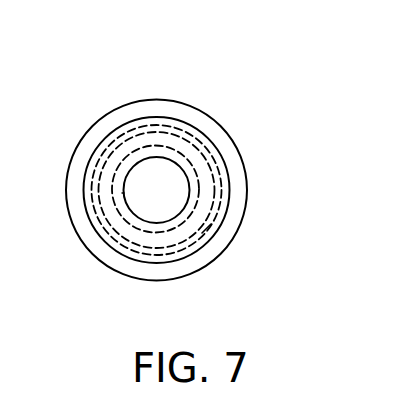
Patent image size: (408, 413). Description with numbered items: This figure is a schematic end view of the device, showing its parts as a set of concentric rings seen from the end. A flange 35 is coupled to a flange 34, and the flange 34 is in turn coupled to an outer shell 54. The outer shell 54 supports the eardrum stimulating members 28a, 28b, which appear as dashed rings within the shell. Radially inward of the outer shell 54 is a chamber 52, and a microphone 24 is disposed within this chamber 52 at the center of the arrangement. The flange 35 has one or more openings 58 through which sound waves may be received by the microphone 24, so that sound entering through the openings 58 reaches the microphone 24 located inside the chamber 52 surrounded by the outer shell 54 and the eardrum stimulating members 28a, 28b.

The microphone 24 is at (173, 186).
The eardrum stimulating member 28a is at (181, 124).
The eardrum stimulating member 28b is at (150, 257).
The flange 34 is at (236, 143).
The flange 35 is at (151, 118).
The chamber 52 is at (122, 228).
The outer shell 54 is at (227, 235).
The opening 58 is at (123, 193).